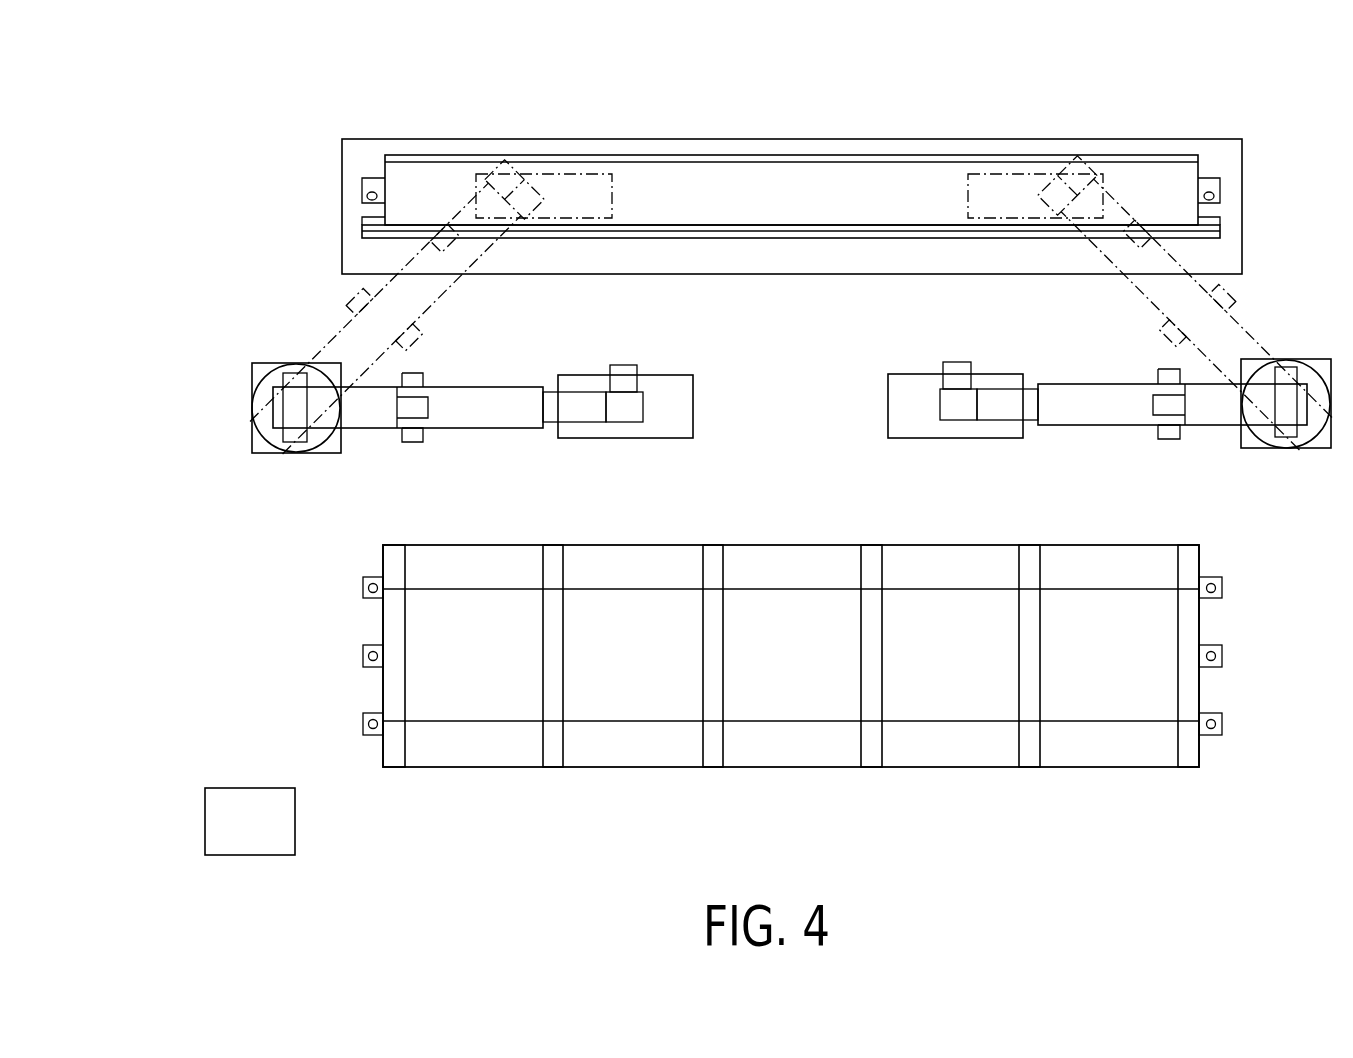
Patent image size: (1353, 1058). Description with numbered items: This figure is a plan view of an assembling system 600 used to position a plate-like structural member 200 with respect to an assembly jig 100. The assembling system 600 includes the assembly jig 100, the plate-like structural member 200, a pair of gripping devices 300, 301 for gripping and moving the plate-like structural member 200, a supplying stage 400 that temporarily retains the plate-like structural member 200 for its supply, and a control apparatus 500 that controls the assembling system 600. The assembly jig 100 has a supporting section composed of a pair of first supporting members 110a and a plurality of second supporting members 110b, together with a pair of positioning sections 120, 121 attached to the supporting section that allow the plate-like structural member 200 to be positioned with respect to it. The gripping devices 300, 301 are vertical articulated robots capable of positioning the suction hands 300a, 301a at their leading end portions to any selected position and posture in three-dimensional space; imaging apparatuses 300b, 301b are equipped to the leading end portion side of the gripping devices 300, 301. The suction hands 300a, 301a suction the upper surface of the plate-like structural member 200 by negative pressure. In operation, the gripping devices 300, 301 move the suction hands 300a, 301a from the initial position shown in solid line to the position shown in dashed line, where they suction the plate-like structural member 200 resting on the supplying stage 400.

The assembling system 600 is at (203, 123).
The supplying stage 400 is at (329, 197).
The plate-like structural member 200 is at (806, 180).
The gripping device 300 is at (302, 488).
The suction hand 300a is at (673, 440).
The imaging apparatus 300b is at (624, 365).
The gripping device 301 is at (1290, 480).
The suction hand 301a is at (950, 440).
The imaging apparatus 301b is at (952, 362).
The assembly jig 100 is at (1256, 768).
The first supporting member 110a is at (795, 578).
The second supporting member 110b is at (395, 768).
The positioning section 120 is at (361, 588).
The positioning section 121 is at (1223, 588).
The control apparatus 500 is at (242, 788).